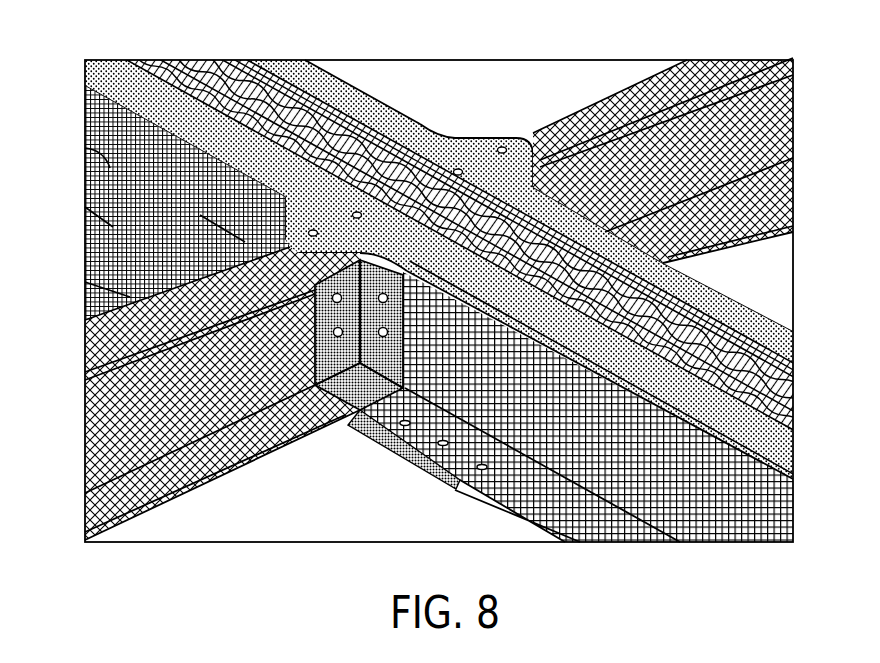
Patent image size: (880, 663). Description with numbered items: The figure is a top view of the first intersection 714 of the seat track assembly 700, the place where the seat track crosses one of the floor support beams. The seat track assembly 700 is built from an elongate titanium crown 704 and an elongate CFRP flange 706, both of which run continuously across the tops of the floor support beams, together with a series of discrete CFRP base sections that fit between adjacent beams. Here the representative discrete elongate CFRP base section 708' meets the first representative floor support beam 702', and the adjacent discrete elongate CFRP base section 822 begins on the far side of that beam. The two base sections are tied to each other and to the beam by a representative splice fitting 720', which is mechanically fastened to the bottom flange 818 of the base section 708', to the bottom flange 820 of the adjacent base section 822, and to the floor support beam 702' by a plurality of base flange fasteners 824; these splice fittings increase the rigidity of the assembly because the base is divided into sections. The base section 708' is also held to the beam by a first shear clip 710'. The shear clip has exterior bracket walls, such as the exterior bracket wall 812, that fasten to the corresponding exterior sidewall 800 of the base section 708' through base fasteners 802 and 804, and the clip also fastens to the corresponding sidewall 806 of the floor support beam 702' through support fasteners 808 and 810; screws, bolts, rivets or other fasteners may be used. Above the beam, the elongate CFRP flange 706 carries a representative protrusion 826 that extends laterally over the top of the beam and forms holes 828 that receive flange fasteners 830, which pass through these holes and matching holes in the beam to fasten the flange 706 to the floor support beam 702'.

The seat track assembly 700 is at (142, 46).
The first intersection 714 is at (518, 70).
The holes 828 is at (288, 213).
The flange fasteners 830 is at (342, 211).
The adjacent discrete elongate CFRP base section 822 is at (105, 163).
The bottom flange of adjacent discrete elongate CFRP base section 820 is at (95, 292).
The representative protrusion 826 is at (226, 226).
The sidewall of floor support beam 806 is at (207, 395).
The first representative floor support beam 702' is at (222, 475).
The representative discrete elongate CFRP base section 708' is at (576, 407).
The elongate titanium crown 704 is at (688, 362).
The elongate CFRP flange 706 is at (633, 377).
The base flange fasteners 824 is at (498, 459).
The bottom flange of representative discrete elongate CFRP base section 818 is at (522, 504).
The representative splice fitting 720' is at (404, 472).
The sidewall of discrete elongate CFRP base section 800 is at (552, 413).
The exterior bracket wall 812 is at (397, 356).
The first shear clip 710' is at (359, 434).
The support fastener 808 is at (313, 306).
The support fastener 810 is at (313, 340).
The base fastener 802 is at (390, 299).
The base fastener 804 is at (390, 333).